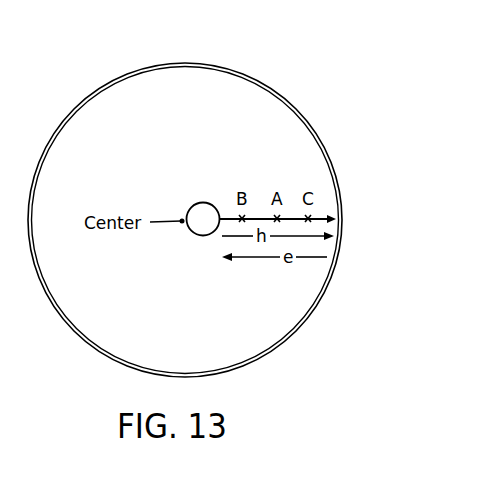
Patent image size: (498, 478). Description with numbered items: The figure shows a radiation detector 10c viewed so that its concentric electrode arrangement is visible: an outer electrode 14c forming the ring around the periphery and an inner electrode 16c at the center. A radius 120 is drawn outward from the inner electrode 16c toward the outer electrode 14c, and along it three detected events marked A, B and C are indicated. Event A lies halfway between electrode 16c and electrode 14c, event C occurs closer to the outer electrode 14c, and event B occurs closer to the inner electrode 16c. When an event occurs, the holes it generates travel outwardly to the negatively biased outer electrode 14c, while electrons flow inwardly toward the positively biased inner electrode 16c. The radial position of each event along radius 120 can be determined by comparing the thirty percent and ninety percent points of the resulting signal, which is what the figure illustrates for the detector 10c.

The detector 10c is at (202, 199).
The outer electrode 14c is at (288, 100).
The inner electrode 16c is at (195, 202).
The radius 120 is at (318, 214).